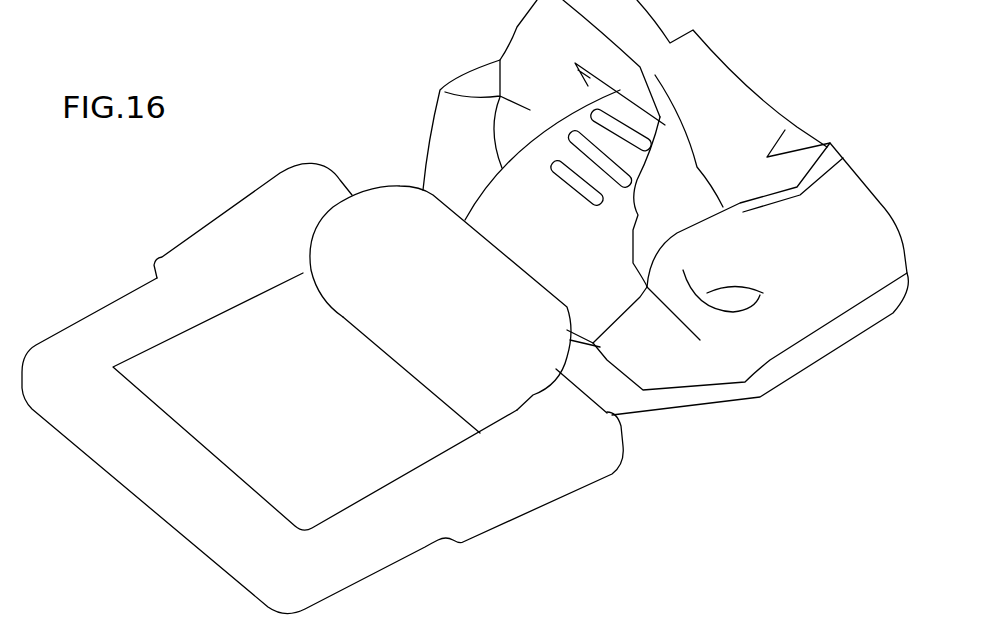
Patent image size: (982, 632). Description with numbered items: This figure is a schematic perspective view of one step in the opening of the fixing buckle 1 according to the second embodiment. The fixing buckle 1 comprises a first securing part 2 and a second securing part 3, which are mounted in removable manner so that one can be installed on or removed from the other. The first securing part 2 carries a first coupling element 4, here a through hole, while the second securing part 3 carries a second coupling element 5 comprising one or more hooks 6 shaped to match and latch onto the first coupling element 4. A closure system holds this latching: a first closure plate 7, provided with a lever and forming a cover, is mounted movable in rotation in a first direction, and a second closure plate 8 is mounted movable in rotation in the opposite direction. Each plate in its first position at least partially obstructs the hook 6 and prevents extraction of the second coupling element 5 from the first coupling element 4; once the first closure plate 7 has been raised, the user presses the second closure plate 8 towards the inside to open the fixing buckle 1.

The fixing buckle 1 is at (281, 87).
The first securing part 2 is at (197, 545).
The second securing part 3 is at (753, 402).
The first coupling element 4 is at (223, 348).
The second coupling element 5 is at (462, 293).
The hook 6 is at (383, 323).
The first closure plate 7 is at (617, 83).
The second closure plate 8 is at (493, 193).